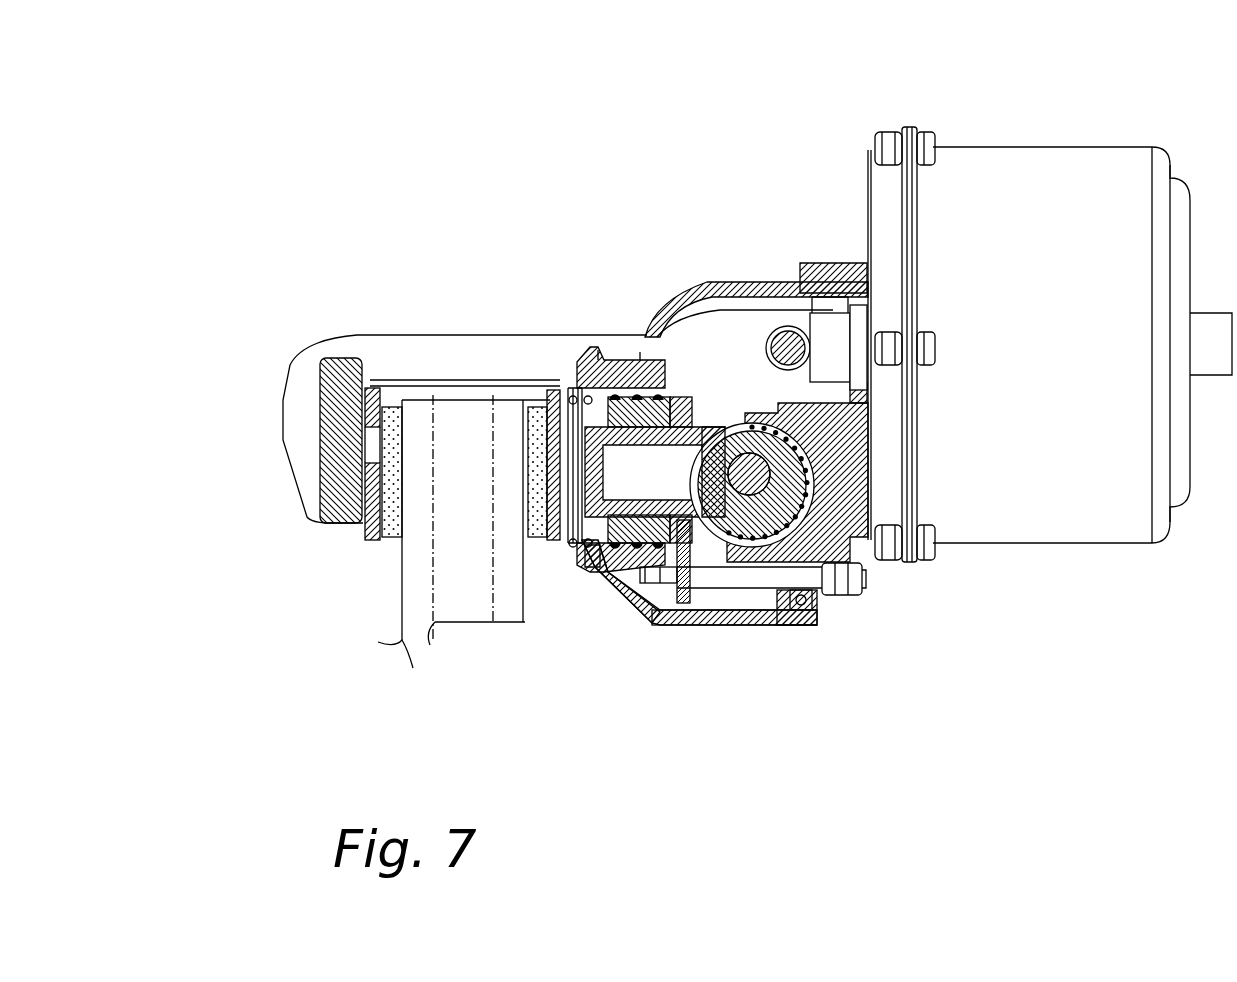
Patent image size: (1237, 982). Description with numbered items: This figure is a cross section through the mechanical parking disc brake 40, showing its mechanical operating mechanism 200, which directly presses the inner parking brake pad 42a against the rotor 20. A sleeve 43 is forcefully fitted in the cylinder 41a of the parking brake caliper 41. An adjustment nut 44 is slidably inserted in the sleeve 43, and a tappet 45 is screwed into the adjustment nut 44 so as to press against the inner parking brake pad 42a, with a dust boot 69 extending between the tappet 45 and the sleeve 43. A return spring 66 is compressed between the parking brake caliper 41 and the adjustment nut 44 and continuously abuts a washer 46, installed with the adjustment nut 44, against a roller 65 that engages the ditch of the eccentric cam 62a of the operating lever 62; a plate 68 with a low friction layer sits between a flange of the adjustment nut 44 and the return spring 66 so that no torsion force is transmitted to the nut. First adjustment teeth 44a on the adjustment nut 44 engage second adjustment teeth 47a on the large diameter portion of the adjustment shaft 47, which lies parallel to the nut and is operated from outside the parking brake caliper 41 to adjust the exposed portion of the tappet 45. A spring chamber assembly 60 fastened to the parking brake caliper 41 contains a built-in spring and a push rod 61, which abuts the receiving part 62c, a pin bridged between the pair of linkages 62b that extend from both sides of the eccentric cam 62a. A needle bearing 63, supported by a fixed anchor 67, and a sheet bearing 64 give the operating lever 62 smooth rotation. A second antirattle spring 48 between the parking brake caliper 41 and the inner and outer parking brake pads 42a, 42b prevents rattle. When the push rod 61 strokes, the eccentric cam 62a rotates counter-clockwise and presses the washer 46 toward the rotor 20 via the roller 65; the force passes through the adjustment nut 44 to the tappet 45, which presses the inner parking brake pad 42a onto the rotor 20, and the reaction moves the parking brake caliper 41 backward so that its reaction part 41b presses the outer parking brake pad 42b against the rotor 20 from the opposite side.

The mechanical operating mechanism 200 is at (511, 101).
The mechanical parking disc brake 40 is at (307, 317).
The parking brake caliper 41 is at (475, 333).
The cylinder 41a is at (606, 562).
The reaction part 41b is at (327, 480).
The inner parking brake pad 42a is at (545, 545).
The outer parking brake pad 42b is at (372, 545).
The sleeve 43 is at (598, 422).
The adjustment nut 44 is at (618, 362).
The first adjustment teeth 44a is at (660, 357).
The tappet 45 is at (570, 395).
The washer 46 is at (703, 395).
The adjustment shaft 47 is at (713, 585).
The second adjustment teeth 47a is at (683, 600).
The second antirattle spring 48 is at (445, 385).
The spring chamber assembly 60 is at (1029, 141).
The push rod 61 is at (835, 330).
The operating lever 62 is at (746, 368).
The eccentric cam 62a is at (740, 615).
The linkages 62b is at (770, 330).
The receiving part 62c is at (798, 330).
The needle bearing 63 is at (770, 605).
The sheet bearing 64 is at (755, 425).
The roller 65 is at (735, 455).
The return spring 66 is at (630, 393).
The fixed anchor 67 is at (858, 540).
The plate 68 is at (663, 565).
The dust boot 69 is at (585, 548).
The rotor 20 is at (468, 615).